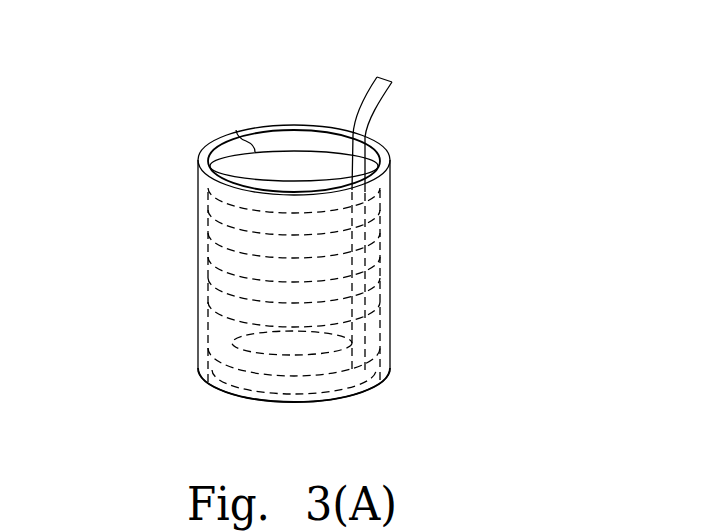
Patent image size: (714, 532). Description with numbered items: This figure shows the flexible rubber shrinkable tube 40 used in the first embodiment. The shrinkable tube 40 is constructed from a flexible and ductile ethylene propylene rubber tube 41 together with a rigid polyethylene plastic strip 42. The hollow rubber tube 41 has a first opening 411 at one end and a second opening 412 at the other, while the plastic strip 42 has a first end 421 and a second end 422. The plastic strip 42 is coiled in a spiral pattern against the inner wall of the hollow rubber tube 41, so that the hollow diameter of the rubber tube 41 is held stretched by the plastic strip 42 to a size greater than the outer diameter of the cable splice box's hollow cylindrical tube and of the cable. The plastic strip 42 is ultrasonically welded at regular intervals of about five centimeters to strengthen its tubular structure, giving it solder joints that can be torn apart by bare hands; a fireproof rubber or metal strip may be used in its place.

The flexible rubber shrinkable tube 40 is at (141, 37).
The ethylene propylene rubber tube 41 is at (199, 226).
The first opening 411 is at (315, 401).
The second opening 412 is at (287, 185).
The plastic strip 42 is at (373, 229).
The first end 421 is at (373, 76).
The second end 422 is at (236, 130).